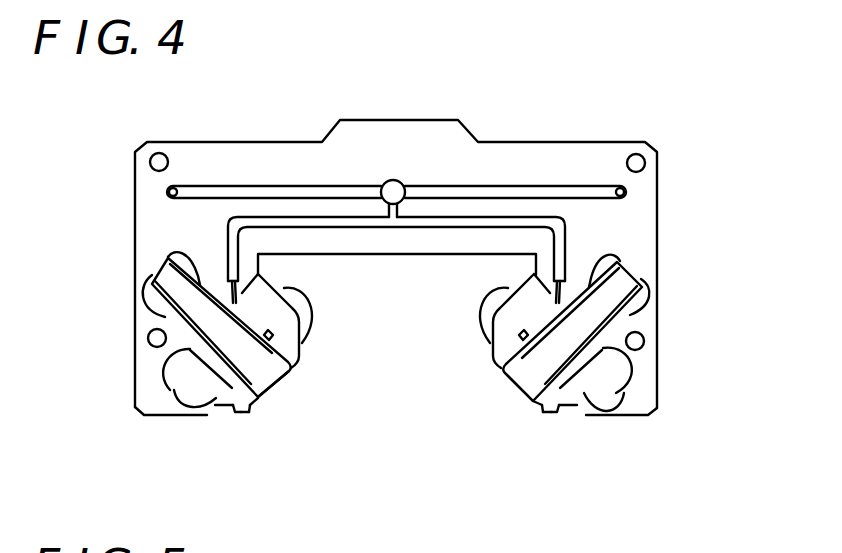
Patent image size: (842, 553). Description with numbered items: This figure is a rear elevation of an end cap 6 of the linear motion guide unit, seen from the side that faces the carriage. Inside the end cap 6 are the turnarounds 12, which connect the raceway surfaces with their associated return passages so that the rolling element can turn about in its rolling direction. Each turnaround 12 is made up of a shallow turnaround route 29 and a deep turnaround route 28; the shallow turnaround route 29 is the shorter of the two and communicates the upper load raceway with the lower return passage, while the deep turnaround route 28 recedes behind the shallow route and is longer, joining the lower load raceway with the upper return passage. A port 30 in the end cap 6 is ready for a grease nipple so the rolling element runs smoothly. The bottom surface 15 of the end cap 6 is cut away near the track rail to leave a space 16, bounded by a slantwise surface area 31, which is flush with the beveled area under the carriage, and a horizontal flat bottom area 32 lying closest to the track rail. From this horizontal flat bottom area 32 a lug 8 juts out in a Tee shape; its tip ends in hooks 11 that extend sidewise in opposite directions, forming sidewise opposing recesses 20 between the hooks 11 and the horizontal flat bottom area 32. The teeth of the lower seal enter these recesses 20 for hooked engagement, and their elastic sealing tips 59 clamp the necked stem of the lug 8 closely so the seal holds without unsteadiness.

The end cap 6 is at (547, 135).
The lug 8 is at (240, 413).
The hooks 11 is at (245, 407).
The turnarounds 12 is at (255, 358).
The bottom surface 15 is at (168, 418).
The space 16 is at (207, 413).
The recesses 20 is at (258, 402).
The deep turnaround route 28 is at (178, 292).
The shallow turnaround route 29 is at (200, 366).
The port 30 is at (283, 192).
The slantwise surface area 31 is at (215, 413).
The horizontal flat bottom area 32 is at (227, 413).
The sealing tips 59 is at (172, 262).